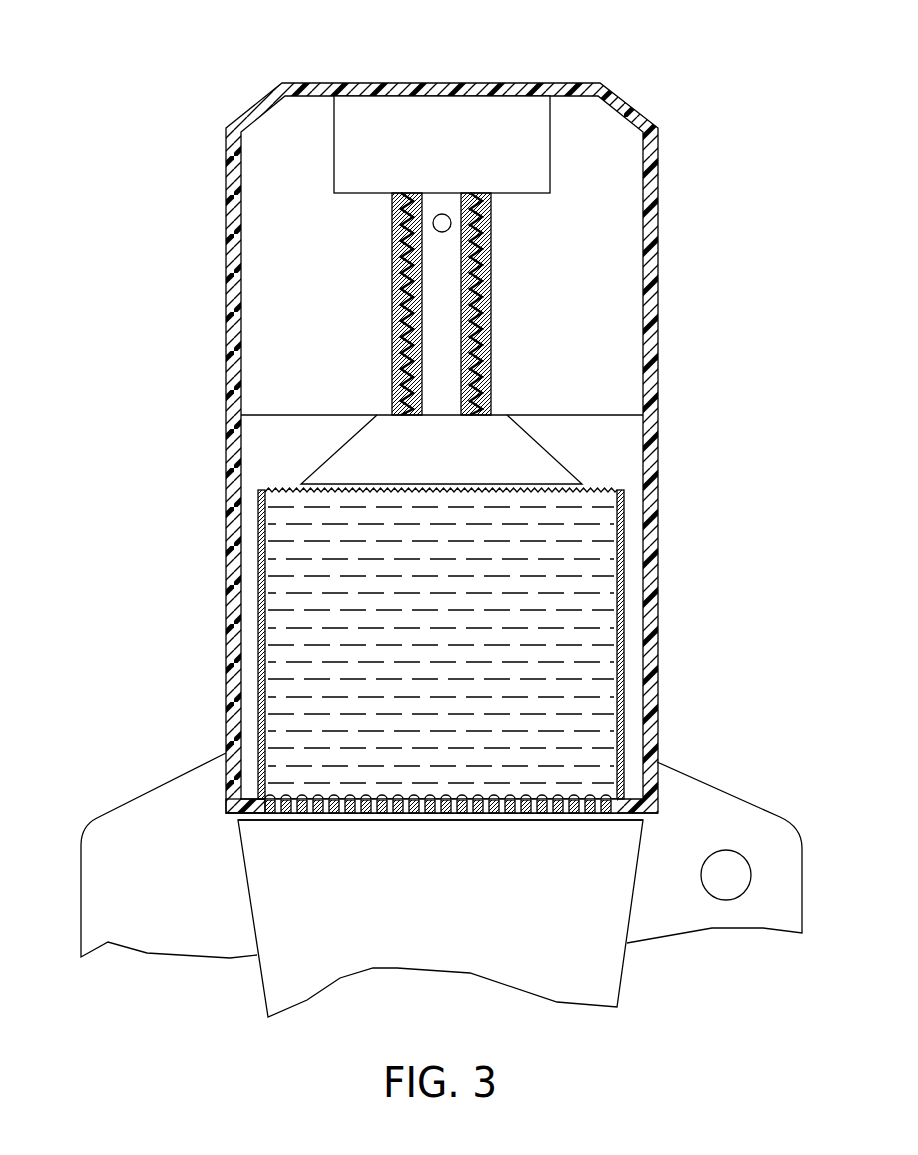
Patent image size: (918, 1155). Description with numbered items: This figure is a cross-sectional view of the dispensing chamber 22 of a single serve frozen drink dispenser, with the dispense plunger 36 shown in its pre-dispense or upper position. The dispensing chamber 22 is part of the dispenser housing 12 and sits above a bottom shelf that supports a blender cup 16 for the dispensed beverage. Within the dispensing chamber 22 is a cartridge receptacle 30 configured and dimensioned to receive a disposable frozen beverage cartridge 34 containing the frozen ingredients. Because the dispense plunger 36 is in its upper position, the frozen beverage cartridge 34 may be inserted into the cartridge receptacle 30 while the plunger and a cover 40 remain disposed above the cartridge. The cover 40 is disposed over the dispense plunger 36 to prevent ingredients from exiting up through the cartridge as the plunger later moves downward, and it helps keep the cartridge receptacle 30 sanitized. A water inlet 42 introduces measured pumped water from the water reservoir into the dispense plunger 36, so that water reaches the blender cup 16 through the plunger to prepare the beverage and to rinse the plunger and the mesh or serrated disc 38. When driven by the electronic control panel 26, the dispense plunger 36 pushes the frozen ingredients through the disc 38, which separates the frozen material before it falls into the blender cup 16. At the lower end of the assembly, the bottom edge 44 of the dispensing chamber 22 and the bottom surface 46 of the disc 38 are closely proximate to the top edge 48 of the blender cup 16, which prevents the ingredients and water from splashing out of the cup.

The housing 12 is at (80, 885).
The blender cup 16 is at (625, 967).
The dispensing chamber 22 is at (627, 103).
The electronic control panel 26 is at (750, 897).
The cartridge receptacle 30 is at (632, 608).
The frozen beverage cartridge 34 is at (260, 601).
The dispense plunger 36 is at (490, 284).
The mesh or serrated disc 38 is at (357, 808).
The cover 40 is at (517, 458).
The water inlet 42 is at (434, 228).
The bottom edge 44 is at (230, 815).
The bottom surface 46 is at (307, 812).
The top edge 48 is at (603, 820).